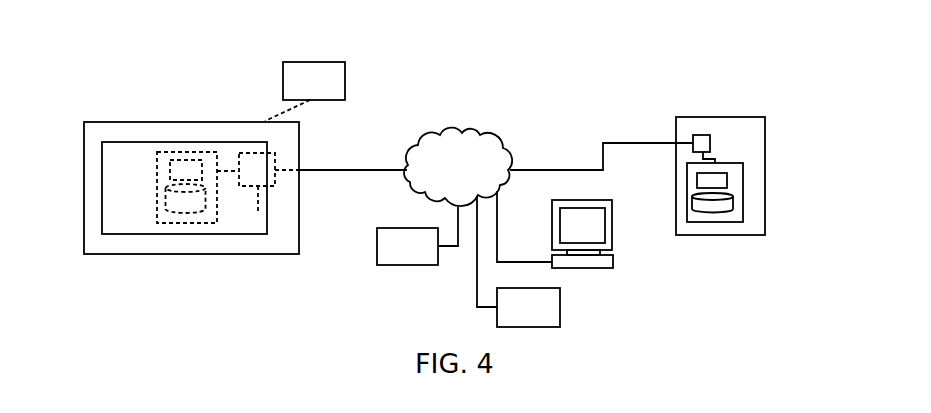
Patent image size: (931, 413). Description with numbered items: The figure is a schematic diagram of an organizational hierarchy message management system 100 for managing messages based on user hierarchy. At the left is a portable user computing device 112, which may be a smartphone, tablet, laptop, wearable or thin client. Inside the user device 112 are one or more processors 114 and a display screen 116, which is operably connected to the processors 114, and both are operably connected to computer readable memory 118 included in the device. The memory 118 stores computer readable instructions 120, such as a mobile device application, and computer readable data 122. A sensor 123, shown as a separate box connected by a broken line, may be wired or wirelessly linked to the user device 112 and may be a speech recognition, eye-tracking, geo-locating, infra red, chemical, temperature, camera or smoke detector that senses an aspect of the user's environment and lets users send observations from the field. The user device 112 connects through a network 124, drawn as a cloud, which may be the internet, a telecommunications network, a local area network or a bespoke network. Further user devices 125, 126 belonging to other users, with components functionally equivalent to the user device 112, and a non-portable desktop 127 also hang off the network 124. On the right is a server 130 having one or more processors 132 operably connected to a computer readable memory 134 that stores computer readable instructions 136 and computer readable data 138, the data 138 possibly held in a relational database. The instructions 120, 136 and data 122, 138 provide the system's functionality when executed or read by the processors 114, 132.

The organizational hierarchy message management system 100 is at (112, 63).
The portable user computing device 112 is at (300, 222).
The processor 114 is at (275, 154).
The display screen 116 is at (256, 234).
The computer readable memory 118 is at (208, 152).
The computer readable instructions 120 is at (185, 160).
The computer readable data 122 is at (180, 213).
The sensor 123 is at (345, 83).
The network 124 is at (510, 153).
The further user device 125 is at (415, 265).
The further user device 126 is at (560, 307).
The desktop 127 is at (613, 262).
The server 130 is at (765, 133).
The processor 132 is at (702, 135).
The computer readable memory 134 is at (743, 177).
The computer readable instructions 136 is at (727, 180).
The computer readable data 138 is at (723, 212).